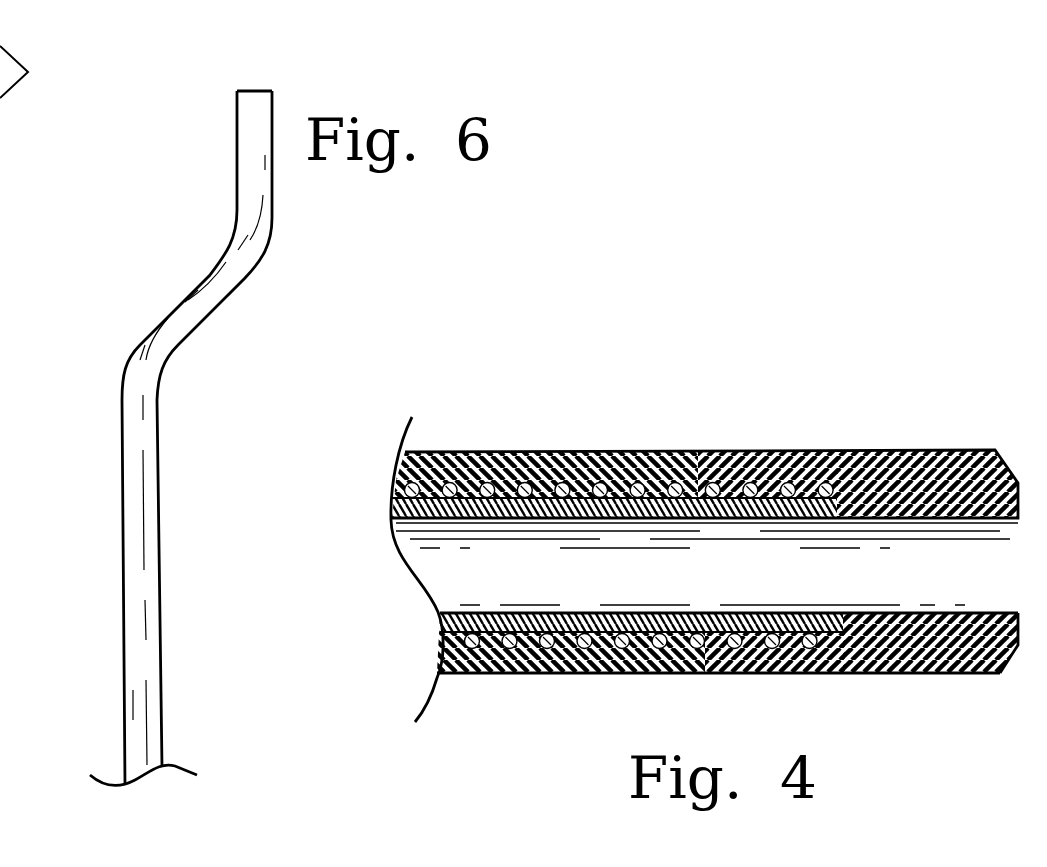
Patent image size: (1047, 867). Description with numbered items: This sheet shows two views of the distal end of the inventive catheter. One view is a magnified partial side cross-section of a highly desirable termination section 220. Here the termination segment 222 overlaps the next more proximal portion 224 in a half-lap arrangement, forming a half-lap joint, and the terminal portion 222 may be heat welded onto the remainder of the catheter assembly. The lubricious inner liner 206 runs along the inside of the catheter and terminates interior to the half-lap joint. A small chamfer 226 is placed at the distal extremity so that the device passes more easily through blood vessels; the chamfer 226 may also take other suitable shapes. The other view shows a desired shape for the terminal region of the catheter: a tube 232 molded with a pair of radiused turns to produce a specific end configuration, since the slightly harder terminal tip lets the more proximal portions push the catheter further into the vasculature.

In FIG. 6, the tubular body 232 is at (128, 367).
In FIG. 4, the termination section 220 is at (755, 375).
In FIG. 4, the termination segment 222 is at (921, 478).
In FIG. 4, the next more proximal portion 224 is at (528, 452).
In FIG. 4, the lubricious inner liner 206 is at (686, 612).
In FIG. 4, the chamfer 226 is at (1015, 652).